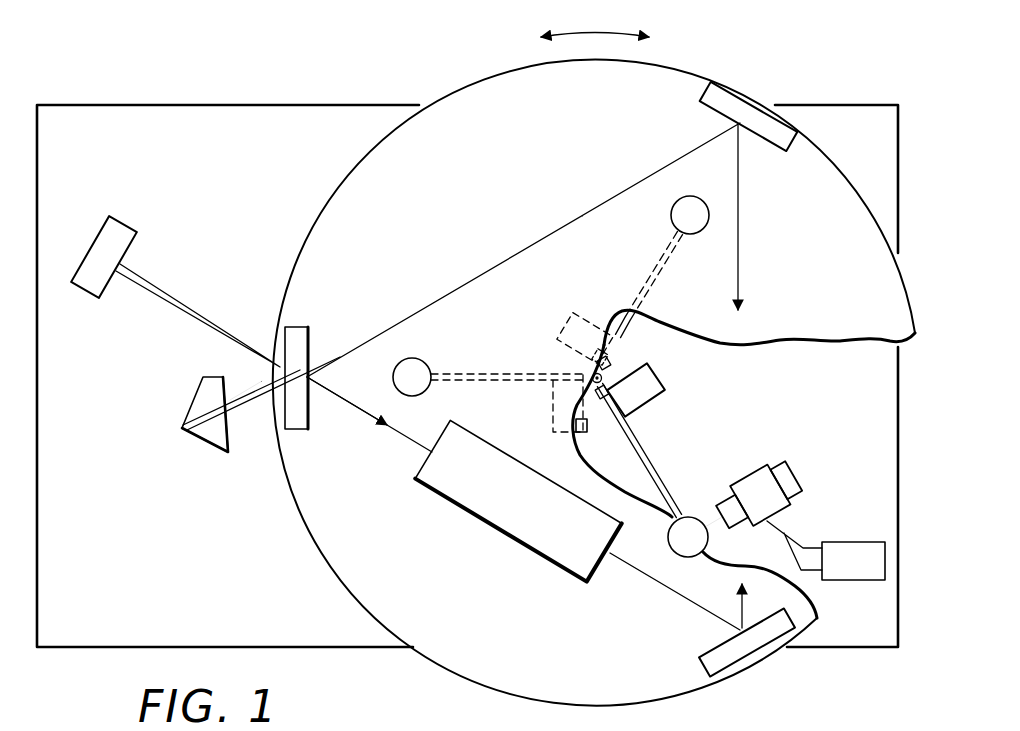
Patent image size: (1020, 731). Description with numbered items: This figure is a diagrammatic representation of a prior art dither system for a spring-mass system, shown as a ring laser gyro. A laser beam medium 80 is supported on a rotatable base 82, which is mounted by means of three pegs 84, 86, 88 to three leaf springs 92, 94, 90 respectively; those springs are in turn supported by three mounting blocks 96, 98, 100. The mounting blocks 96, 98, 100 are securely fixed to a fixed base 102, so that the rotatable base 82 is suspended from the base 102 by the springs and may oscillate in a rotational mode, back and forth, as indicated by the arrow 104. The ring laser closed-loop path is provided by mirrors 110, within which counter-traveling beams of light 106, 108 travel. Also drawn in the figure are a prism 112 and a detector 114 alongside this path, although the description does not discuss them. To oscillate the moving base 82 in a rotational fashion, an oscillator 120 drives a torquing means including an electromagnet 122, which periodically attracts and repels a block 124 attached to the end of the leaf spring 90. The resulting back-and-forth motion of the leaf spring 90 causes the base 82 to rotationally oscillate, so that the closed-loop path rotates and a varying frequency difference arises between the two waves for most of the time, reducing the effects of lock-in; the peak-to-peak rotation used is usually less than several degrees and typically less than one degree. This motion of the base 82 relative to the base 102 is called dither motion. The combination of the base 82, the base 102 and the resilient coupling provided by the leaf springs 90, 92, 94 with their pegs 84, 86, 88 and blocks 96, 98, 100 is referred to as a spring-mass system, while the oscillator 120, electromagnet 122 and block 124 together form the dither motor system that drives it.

The laser beam medium 80 is at (545, 478).
The rotatable base 82 is at (447, 89).
The peg 84 is at (414, 358).
The peg 86 is at (693, 196).
The peg 88 is at (677, 557).
The leaf spring 90 is at (643, 445).
The leaf spring 92 is at (528, 380).
The leaf spring 94 is at (628, 330).
The mounting block 96 is at (589, 420).
The mounting block 98 is at (590, 315).
The mounting block 100 is at (668, 385).
The base 102 is at (834, 107).
The arrow 104 is at (584, 32).
The beam of light 106 is at (436, 299).
The beam of light 108 is at (582, 212).
The mirror 110 is at (293, 327).
The prism 112 is at (212, 443).
The detector 114 is at (119, 216).
The oscillator 120 is at (593, 376).
The electromagnet 122 is at (795, 478).
The block 124 is at (675, 516).